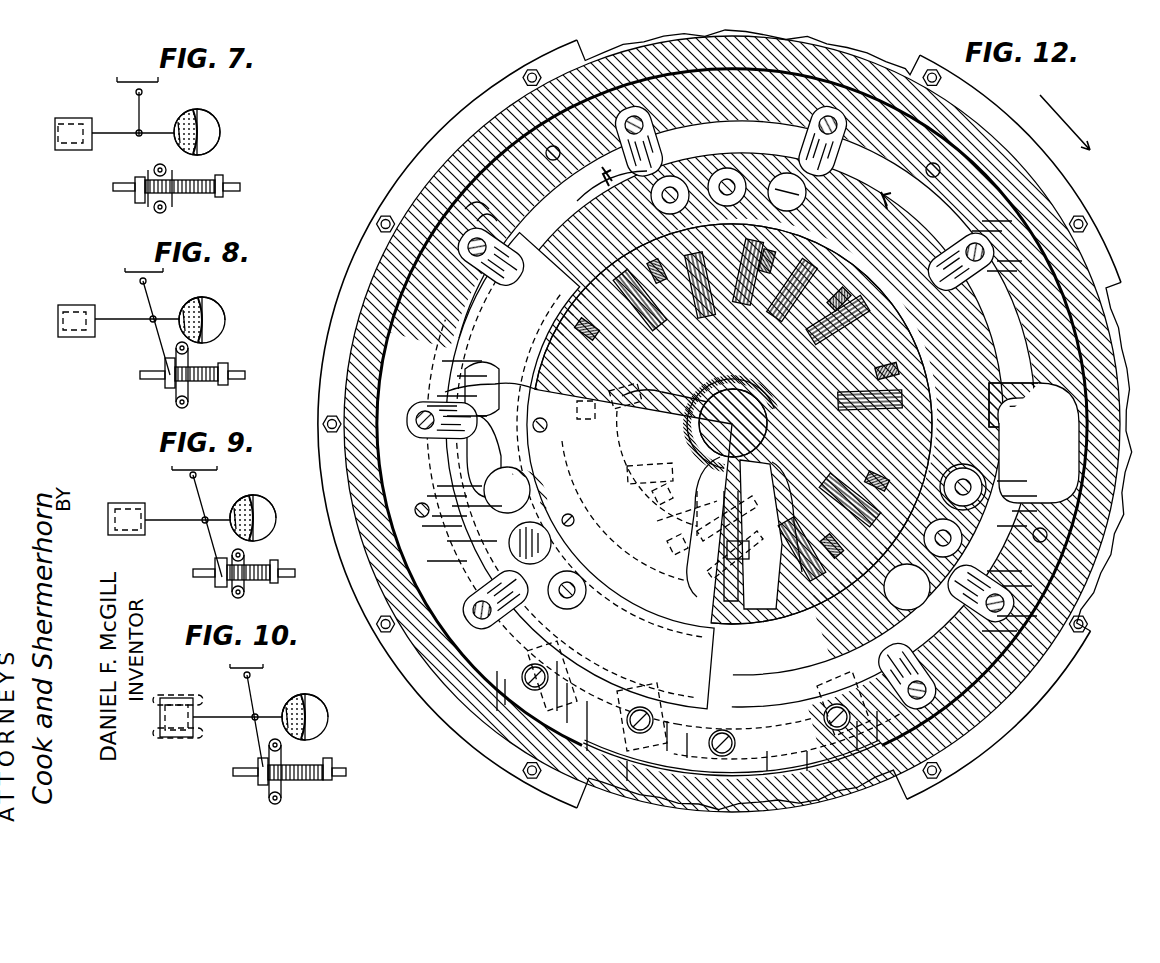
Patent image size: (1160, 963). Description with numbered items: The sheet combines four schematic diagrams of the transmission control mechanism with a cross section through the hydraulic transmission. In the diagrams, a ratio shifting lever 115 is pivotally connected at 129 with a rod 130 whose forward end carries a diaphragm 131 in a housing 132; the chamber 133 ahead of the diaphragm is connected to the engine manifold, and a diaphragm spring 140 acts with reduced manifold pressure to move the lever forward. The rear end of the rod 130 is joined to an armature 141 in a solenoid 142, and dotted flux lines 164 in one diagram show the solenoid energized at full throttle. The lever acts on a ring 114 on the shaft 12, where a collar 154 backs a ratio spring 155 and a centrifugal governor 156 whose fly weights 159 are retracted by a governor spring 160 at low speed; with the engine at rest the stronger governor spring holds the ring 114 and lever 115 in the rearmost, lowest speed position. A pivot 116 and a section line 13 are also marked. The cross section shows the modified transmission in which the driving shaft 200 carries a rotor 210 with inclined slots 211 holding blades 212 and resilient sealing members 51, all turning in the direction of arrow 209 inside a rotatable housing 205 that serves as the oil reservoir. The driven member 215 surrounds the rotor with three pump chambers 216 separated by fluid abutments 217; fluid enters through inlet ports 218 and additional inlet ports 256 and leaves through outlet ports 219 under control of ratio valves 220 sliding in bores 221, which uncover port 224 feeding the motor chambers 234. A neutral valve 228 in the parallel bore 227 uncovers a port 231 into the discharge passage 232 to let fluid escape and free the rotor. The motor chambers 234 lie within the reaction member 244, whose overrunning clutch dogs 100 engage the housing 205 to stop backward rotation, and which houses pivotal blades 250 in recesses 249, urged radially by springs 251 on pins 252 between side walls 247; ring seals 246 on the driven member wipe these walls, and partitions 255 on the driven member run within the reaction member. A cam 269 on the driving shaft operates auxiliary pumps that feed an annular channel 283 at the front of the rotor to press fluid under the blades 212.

In FIG. 7, the shaft 12 is at (116, 191).
In FIG. 8, the shaft 12 is at (147, 379).
In FIG. 9, the shaft 12 is at (200, 578).
In FIG. 10, the shaft 12 is at (245, 777).
In FIG. 12, the section line 13 is at (748, 187).
In FIG. 12, the resilient sealing members 51 is at (738, 555).
In FIG. 12, the overrunning clutch dogs 100 is at (713, 420).
In FIG. 7, the ring 114 is at (135, 183).
In FIG. 8, the ring 114 is at (165, 366).
In FIG. 9, the ring 114 is at (215, 567).
In FIG. 10, the ring 114 is at (263, 771).
In FIG. 7, the ratio shifting lever 115 is at (139, 108).
In FIG. 8, the ratio shifting lever 115 is at (149, 296).
In FIG. 9, the ratio shifting lever 115 is at (199, 493).
In FIG. 10, the ratio shifting lever 115 is at (249, 690).
In FIG. 7, the pivot 116 is at (135, 92).
In FIG. 8, the pivot 116 is at (139, 281).
In FIG. 9, the pivot 116 is at (189, 476).
In FIG. 10, the pivot 116 is at (243, 676).
In FIG. 7, the pivotal connection 129 is at (136, 131).
In FIG. 8, the pivotal connection 129 is at (150, 318).
In FIG. 9, the pivotal connection 129 is at (202, 518).
In FIG. 10, the pivotal connection 129 is at (252, 716).
In FIG. 7, the rod 130 is at (130, 135).
In FIG. 8, the rod 130 is at (140, 322).
In FIG. 9, the rod 130 is at (190, 521).
In FIG. 10, the rod 130 is at (212, 718).
In FIG. 7, the diaphragm 131 is at (197, 109).
In FIG. 8, the diaphragm 131 is at (208, 304).
In FIG. 9, the diaphragm 131 is at (265, 503).
In FIG. 10, the diaphragm 131 is at (312, 700).
In FIG. 7, the housing 132 is at (215, 115).
In FIG. 8, the housing 132 is at (201, 298).
In FIG. 9, the housing 132 is at (253, 495).
In FIG. 10, the housing 132 is at (302, 695).
In FIG. 7, the chamber 133 is at (220, 130).
In FIG. 8, the chamber 133 is at (223, 317).
In FIG. 9, the chamber 133 is at (276, 516).
In FIG. 10, the chamber 133 is at (327, 709).
In FIG. 7, the diaphragm spring 140 is at (178, 124).
In FIG. 8, the diaphragm spring 140 is at (183, 314).
In FIG. 9, the diaphragm spring 140 is at (234, 512).
In FIG. 10, the diaphragm spring 140 is at (286, 712).
In FIG. 7, the reciprocating armature 141 is at (55, 134).
In FIG. 8, the reciprocating armature 141 is at (58, 319).
In FIG. 9, the reciprocating armature 141 is at (138, 509).
In FIG. 10, the reciprocating armature 141 is at (176, 717).
In FIG. 7, the solenoid 142 is at (63, 118).
In FIG. 8, the solenoid 142 is at (58, 308).
In FIG. 9, the solenoid 142 is at (112, 503).
In FIG. 10, the solenoid 142 is at (178, 738).
In FIG. 7, the collar 154 is at (223, 176).
In FIG. 8, the collar 154 is at (228, 367).
In FIG. 9, the collar 154 is at (278, 563).
In FIG. 10, the collar 154 is at (331, 758).
In FIG. 7, the compression spring 155 is at (211, 196).
In FIG. 8, the compression spring 155 is at (215, 385).
In FIG. 9, the compression spring 155 is at (272, 583).
In FIG. 10, the compression spring 155 is at (325, 781).
In FIG. 7, the centrifugal governor device 156 is at (176, 205).
In FIG. 8, the centrifugal governor device 156 is at (192, 352).
In FIG. 9, the centrifugal governor device 156 is at (234, 551).
In FIG. 10, the centrifugal governor device 156 is at (286, 750).
In FIG. 7, the fly weights 159 is at (154, 208).
In FIG. 8, the fly weights 159 is at (176, 402).
In FIG. 9, the fly weights 159 is at (232, 594).
In FIG. 10, the fly weights 159 is at (269, 801).
In FIG. 7, the second compression spring 160 is at (167, 170).
In FIG. 8, the second compression spring 160 is at (188, 396).
In FIG. 9, the second compression spring 160 is at (250, 556).
In FIG. 10, the second compression spring 160 is at (285, 790).
In FIG. 10, the dotted lines 164 is at (181, 695).
In FIG. 12, the driving shaft 200 is at (701, 423).
In FIG. 12, the rotatable cylindrical housing 205 is at (770, 419).
In FIG. 12, the arrow 209 is at (1070, 122).
In FIG. 12, the driving member 210 is at (744, 527).
In FIG. 12, the forwardly inclined slots 211 is at (749, 546).
In FIG. 12, the blades 212 is at (696, 513).
In FIG. 12, the driven member 215 is at (749, 420).
In FIG. 12, the pump chambers 216 is at (684, 471).
In FIG. 12, the partitions or fluid abutments 217 is at (757, 405).
In FIG. 12, the inlet ports 218 is at (713, 408).
In FIG. 12, the outlet ports 219 is at (946, 478).
In FIG. 12, the ratio valves 220 is at (765, 395).
In FIG. 12, the cylindrical bore 221 is at (595, 522).
In FIG. 12, the port 224 is at (611, 189).
In FIG. 12, the parallel cylinder or bore 227 is at (583, 530).
In FIG. 12, the balanced neutral valve 228 is at (778, 531).
In FIG. 12, the port 231 is at (488, 502).
In FIG. 12, the longitudinal discharge passage 232 is at (707, 538).
In FIG. 12, the motor chambers 234 is at (747, 414).
In FIG. 12, the reaction member 244 is at (347, 228).
In FIG. 12, the resilient ring seals 246 is at (707, 331).
In FIG. 12, the side walls 247 is at (651, 711).
In FIG. 12, the recesses 249 is at (1039, 443).
In FIG. 12, the pivotal blades 250 is at (745, 316).
In FIG. 12, the springs 251 is at (1032, 436).
In FIG. 12, the longitudinal pin 252 is at (492, 203).
In FIG. 12, the partitions or fluid abutments 255 is at (1021, 503).
In FIG. 12, the additional inlet ports 256 is at (733, 424).
In FIG. 12, the cam 269 is at (705, 423).
In FIG. 12, the annular channel 283 is at (576, 388).